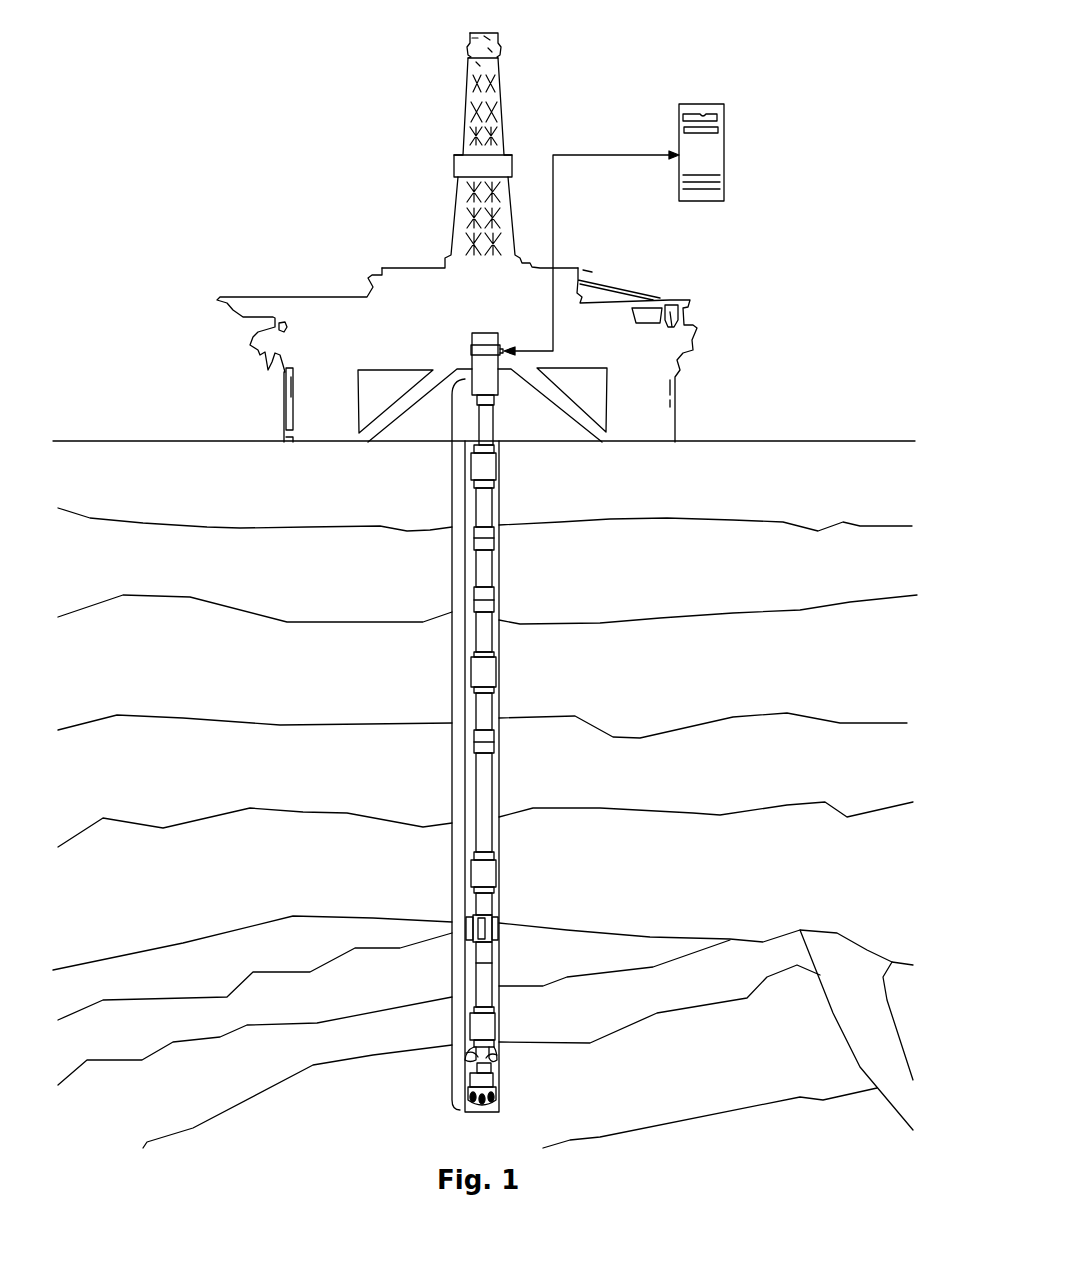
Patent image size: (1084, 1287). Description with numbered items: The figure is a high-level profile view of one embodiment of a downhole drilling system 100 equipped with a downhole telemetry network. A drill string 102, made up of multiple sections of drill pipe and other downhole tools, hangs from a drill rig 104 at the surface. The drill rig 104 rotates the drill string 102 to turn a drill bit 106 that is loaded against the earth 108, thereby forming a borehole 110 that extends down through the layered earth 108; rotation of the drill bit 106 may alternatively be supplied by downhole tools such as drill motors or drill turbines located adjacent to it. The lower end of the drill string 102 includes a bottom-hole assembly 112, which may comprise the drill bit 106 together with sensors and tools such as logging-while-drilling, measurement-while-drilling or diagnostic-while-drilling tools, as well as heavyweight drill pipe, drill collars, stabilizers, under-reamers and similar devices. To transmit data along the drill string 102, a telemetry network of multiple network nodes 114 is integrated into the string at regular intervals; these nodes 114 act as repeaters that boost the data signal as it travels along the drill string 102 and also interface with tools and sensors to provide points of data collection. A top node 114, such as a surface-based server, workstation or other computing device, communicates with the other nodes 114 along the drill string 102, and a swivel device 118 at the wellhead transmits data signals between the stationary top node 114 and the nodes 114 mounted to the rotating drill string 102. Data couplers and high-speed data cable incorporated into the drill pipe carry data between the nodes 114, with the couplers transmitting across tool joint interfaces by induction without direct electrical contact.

The downhole drilling system 100 is at (155, 160).
The drill string 102 is at (452, 730).
The drill rig 104 is at (410, 283).
The drill bit 106 is at (505, 1108).
The earth 108 is at (254, 496).
The borehole 110 is at (497, 774).
The bottom-hole assembly 112 is at (507, 1107).
The network node 114 is at (702, 104).
The swivel device 118 is at (471, 351).